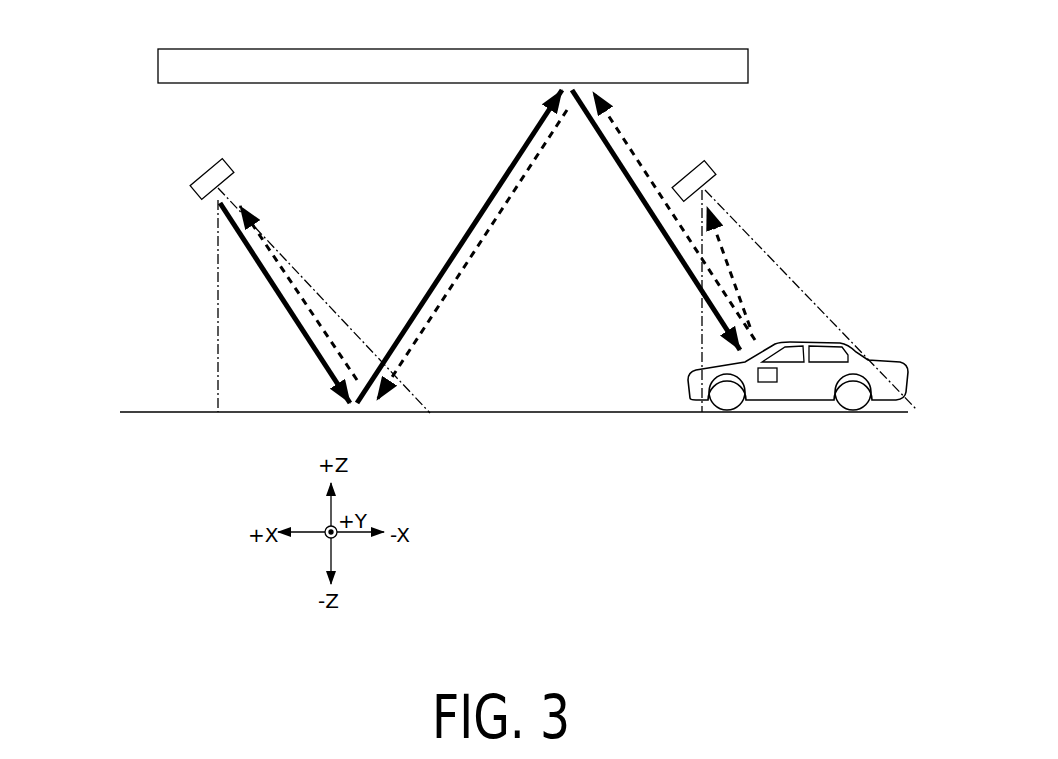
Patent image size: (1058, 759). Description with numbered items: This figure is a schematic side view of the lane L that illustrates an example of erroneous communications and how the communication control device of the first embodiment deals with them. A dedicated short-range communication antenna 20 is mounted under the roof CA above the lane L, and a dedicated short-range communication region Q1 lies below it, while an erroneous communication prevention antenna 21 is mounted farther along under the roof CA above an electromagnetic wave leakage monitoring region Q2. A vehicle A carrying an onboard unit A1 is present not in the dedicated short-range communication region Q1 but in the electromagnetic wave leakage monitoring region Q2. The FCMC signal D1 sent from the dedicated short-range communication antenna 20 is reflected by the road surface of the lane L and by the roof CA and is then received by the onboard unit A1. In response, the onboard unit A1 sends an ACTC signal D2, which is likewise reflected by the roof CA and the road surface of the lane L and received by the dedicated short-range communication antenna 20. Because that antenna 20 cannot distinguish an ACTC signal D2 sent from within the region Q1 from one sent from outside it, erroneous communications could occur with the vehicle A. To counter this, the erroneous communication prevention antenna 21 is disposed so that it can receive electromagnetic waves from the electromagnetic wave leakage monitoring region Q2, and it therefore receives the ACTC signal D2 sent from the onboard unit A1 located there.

The roof CA is at (372, 48).
The lane L is at (142, 411).
The dedicated short-range communication antenna 20 is at (203, 171).
The erroneous communication prevention antenna 21 is at (690, 168).
The dedicated short-range communication region Q1 is at (233, 383).
The electromagnetic wave leakage monitoring region Q2 is at (702, 350).
The FCMC signal D1 is at (300, 330).
The ACTC signal D2 is at (290, 273).
The vehicle A is at (893, 358).
The onboard unit A1 is at (768, 382).